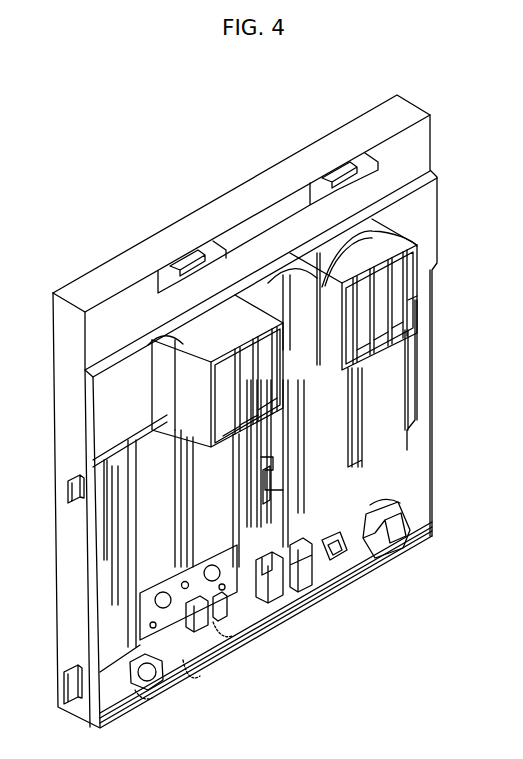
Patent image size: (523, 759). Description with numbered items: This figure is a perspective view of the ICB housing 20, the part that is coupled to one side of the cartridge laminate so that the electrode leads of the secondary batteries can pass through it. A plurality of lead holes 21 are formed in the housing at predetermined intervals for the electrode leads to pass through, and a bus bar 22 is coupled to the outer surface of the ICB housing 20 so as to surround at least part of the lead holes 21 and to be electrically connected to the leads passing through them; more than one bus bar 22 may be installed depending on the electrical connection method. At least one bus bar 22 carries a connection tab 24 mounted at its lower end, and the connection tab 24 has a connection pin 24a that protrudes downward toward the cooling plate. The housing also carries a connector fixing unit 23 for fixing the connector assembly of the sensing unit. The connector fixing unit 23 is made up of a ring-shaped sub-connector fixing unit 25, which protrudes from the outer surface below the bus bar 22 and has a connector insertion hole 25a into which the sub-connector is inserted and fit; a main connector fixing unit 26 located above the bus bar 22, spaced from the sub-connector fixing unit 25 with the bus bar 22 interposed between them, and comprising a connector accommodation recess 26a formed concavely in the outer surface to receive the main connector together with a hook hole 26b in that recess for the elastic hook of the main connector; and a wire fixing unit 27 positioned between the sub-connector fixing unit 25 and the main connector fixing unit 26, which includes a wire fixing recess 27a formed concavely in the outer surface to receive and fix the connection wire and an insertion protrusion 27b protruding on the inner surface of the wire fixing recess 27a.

The ICB housing 20 is at (150, 142).
The lead holes 21 is at (118, 517).
The bus bar 22 is at (148, 563).
The connector fixing unit 23 is at (372, 477).
The connection tab 24 is at (163, 624).
The connection pin 24a is at (215, 608).
The sub-connector fixing unit 25 is at (321, 601).
The connector insertion hole 25a is at (286, 597).
The main connector fixing unit 26 is at (385, 233).
The connector accommodation recess 26a is at (312, 299).
The hook hole 26b is at (273, 303).
The wire fixing unit 27 is at (407, 528).
The wire fixing recess 27a is at (268, 477).
The insertion protrusion 27b is at (273, 458).